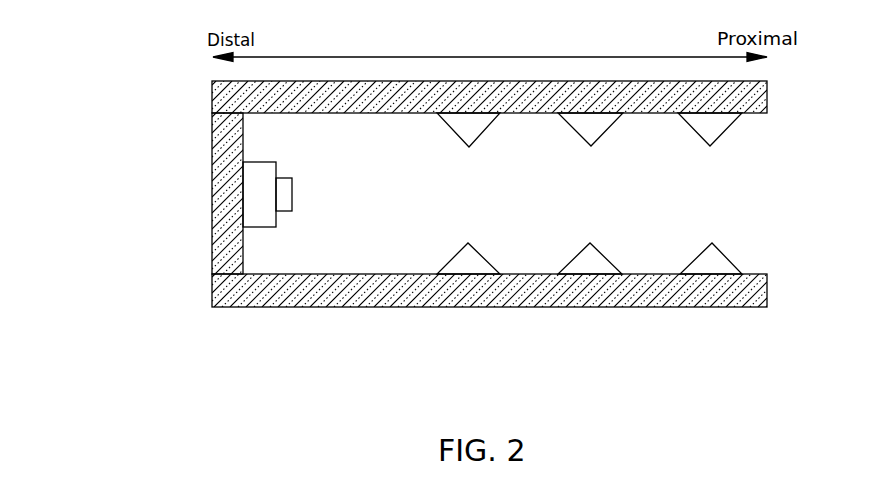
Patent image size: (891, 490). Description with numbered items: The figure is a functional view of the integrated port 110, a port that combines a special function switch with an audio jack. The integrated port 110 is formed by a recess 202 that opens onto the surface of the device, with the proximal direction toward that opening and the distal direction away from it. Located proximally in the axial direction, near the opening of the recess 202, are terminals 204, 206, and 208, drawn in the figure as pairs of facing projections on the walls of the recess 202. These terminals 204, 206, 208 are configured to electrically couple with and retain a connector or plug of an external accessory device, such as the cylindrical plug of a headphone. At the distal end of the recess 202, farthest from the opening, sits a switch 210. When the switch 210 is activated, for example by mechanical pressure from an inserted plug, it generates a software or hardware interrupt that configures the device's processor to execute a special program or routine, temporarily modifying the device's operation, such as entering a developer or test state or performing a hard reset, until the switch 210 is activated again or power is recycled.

The integrated port 110 is at (212, 293).
The recess 202 is at (765, 174).
The terminal 204 is at (463, 143).
The terminal 206 is at (584, 141).
The terminal 208 is at (702, 141).
The switch 210 is at (293, 195).